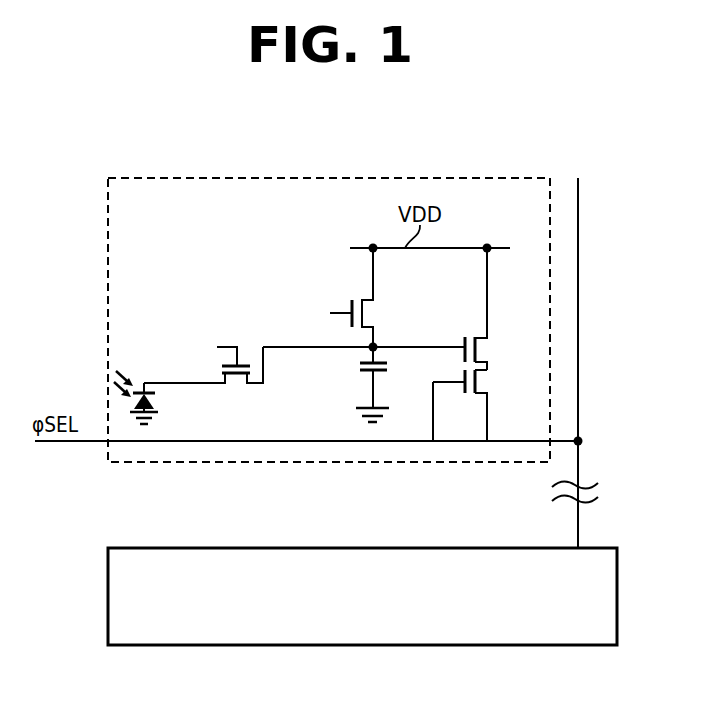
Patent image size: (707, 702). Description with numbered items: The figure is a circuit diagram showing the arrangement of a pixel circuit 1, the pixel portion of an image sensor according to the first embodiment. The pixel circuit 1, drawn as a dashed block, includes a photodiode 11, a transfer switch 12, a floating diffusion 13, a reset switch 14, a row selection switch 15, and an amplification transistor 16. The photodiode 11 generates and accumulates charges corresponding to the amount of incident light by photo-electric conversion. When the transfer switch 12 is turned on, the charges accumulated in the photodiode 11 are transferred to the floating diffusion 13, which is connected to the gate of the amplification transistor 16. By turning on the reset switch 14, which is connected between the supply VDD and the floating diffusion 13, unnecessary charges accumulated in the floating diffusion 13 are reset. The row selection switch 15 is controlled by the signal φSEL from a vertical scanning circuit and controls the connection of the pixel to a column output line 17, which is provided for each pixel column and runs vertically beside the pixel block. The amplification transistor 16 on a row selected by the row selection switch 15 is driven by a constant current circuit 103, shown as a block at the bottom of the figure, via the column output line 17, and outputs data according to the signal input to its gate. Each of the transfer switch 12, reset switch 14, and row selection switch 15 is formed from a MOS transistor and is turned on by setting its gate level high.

The pixel circuit 1 is at (527, 178).
The photodiode 11 is at (158, 408).
The transfer switch 12 is at (236, 378).
The floating diffusion 13 is at (357, 370).
The reset switch 14 is at (368, 314).
The row selection switch 15 is at (482, 384).
The amplification transistor 16 is at (482, 348).
The column output line 17 is at (580, 208).
The constant current circuit 103 is at (492, 534).